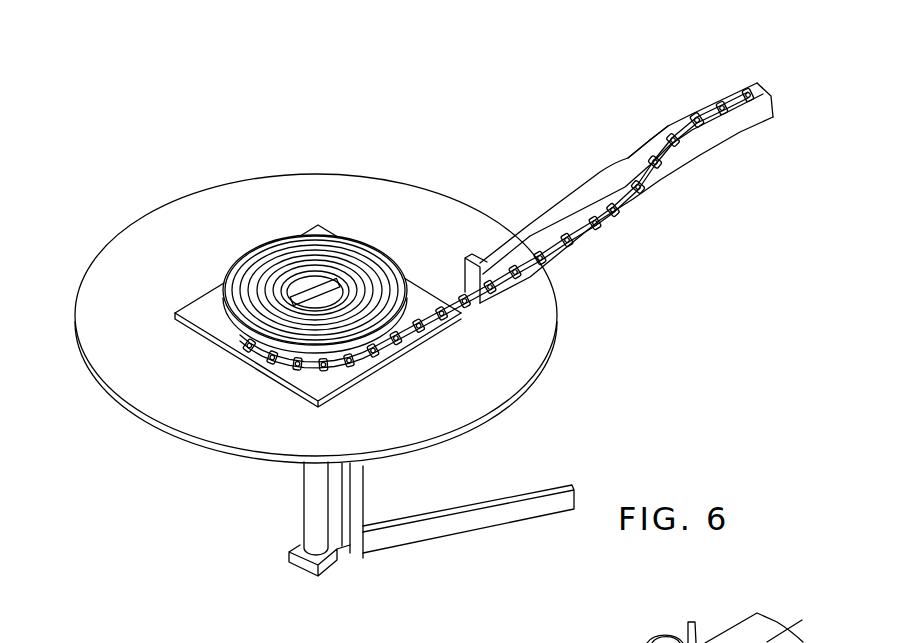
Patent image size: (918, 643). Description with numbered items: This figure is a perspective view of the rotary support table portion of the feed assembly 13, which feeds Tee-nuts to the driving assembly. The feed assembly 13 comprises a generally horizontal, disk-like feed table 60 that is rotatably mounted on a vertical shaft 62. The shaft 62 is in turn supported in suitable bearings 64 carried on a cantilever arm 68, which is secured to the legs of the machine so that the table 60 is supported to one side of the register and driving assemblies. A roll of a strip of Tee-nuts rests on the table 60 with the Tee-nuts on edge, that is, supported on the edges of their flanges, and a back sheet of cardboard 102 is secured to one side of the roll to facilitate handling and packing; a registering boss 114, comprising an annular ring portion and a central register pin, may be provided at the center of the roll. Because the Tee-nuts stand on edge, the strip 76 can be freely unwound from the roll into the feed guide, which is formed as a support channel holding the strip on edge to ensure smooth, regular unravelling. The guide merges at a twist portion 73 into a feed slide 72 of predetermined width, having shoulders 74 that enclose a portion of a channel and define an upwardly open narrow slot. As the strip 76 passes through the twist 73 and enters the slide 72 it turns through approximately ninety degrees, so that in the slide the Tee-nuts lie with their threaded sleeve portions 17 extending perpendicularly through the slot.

The feed assembly 13 is at (440, 144).
The feed table 60 is at (240, 227).
The vertical shaft 62 is at (312, 495).
The bearings 64 is at (300, 562).
The cantilever arm 68 is at (537, 508).
The feed slide 72 is at (478, 257).
The twist portion 73 is at (663, 210).
The shoulders 74 is at (698, 116).
The strip of Tee-nuts 76 is at (427, 345).
The back sheet of cardboard 102 is at (204, 306).
The registering boss 114 is at (318, 280).
The threaded sleeve portions 17 is at (538, 642).